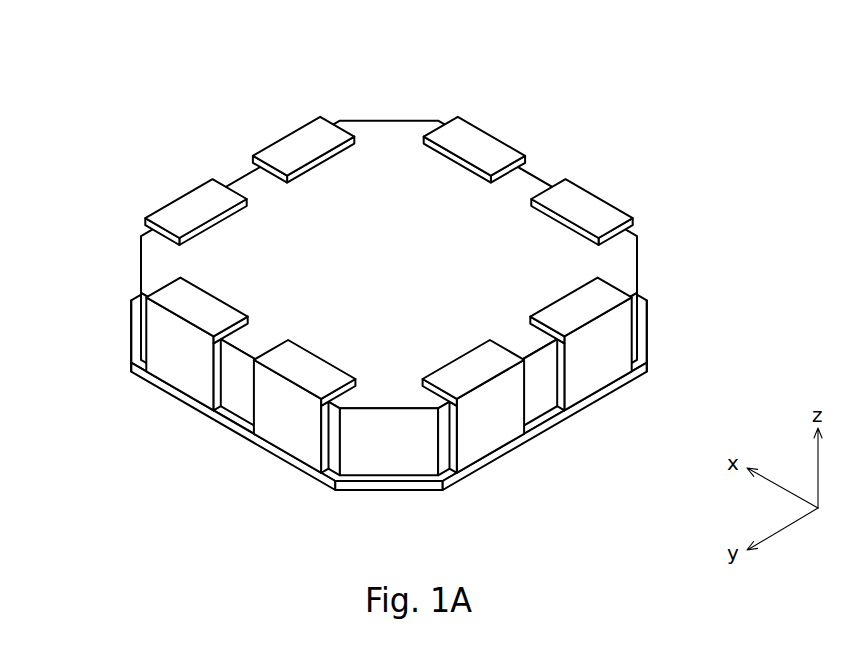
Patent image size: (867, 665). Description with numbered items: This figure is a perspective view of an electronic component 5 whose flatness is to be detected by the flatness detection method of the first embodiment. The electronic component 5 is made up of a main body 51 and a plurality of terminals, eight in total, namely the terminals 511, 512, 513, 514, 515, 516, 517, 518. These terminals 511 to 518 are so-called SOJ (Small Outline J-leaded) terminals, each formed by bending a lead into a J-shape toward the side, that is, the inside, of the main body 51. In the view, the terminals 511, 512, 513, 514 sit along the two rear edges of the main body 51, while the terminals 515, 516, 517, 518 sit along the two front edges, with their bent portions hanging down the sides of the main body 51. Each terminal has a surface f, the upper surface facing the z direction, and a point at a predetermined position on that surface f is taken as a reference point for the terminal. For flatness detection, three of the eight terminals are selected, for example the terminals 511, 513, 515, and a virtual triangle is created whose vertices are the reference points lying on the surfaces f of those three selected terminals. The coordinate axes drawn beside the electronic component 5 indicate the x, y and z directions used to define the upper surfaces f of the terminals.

The electronic component 5 is at (390, 260).
The main body 51 is at (387, 162).
The terminal 511 is at (180, 195).
The terminal 512 is at (290, 135).
The terminal 513 is at (488, 133).
The terminal 514 is at (597, 195).
The terminal 515 is at (592, 320).
The terminal 516 is at (500, 382).
The terminal 517 is at (293, 383).
The terminal 518 is at (190, 318).
The surface f is at (198, 210).